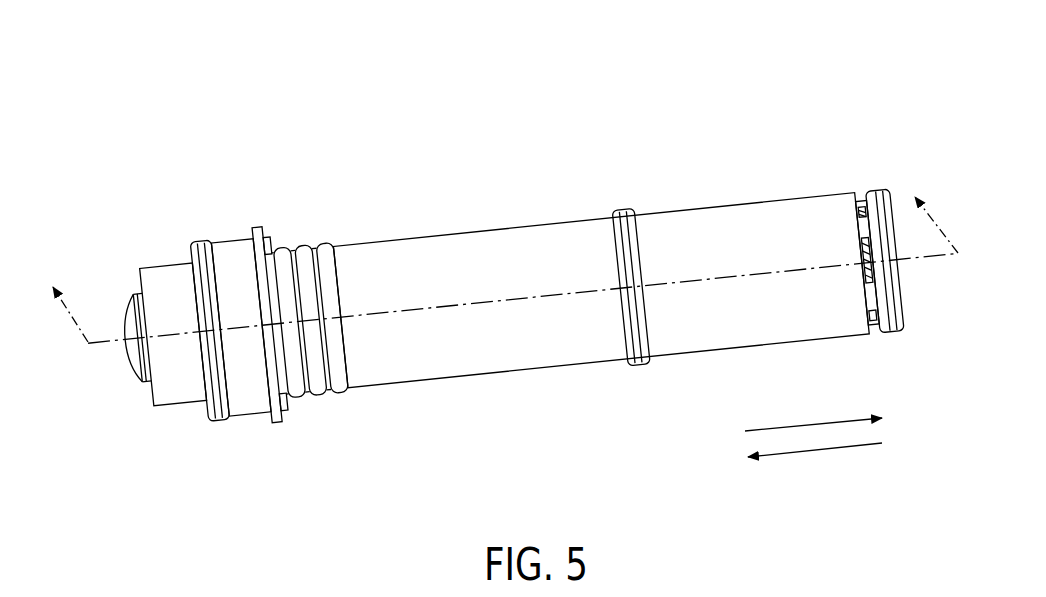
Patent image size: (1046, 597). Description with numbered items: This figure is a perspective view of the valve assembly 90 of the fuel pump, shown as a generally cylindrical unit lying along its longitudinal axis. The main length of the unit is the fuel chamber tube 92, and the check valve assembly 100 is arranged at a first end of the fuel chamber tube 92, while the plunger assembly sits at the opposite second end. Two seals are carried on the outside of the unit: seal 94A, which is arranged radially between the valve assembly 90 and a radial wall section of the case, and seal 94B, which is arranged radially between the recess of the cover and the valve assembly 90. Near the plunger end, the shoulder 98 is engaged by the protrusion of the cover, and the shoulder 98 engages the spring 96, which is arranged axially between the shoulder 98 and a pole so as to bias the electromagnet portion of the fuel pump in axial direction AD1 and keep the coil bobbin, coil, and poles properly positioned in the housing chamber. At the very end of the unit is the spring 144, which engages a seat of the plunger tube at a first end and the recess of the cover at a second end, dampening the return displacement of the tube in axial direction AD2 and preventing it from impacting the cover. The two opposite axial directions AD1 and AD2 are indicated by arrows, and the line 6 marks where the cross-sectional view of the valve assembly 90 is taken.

The valve assembly 90 is at (774, 86).
The fuel chamber tube 92 is at (465, 248).
The seal 94A is at (623, 222).
The seal 94B is at (197, 245).
The spring 96 is at (327, 250).
The shoulder 98 is at (243, 245).
The check valve assembly 100 is at (869, 178).
The spring 144 is at (143, 377).
The section line 6- 6 is at (500, 253).
The axial direction AD1 is at (808, 424).
The axial direction AD2 is at (828, 448).